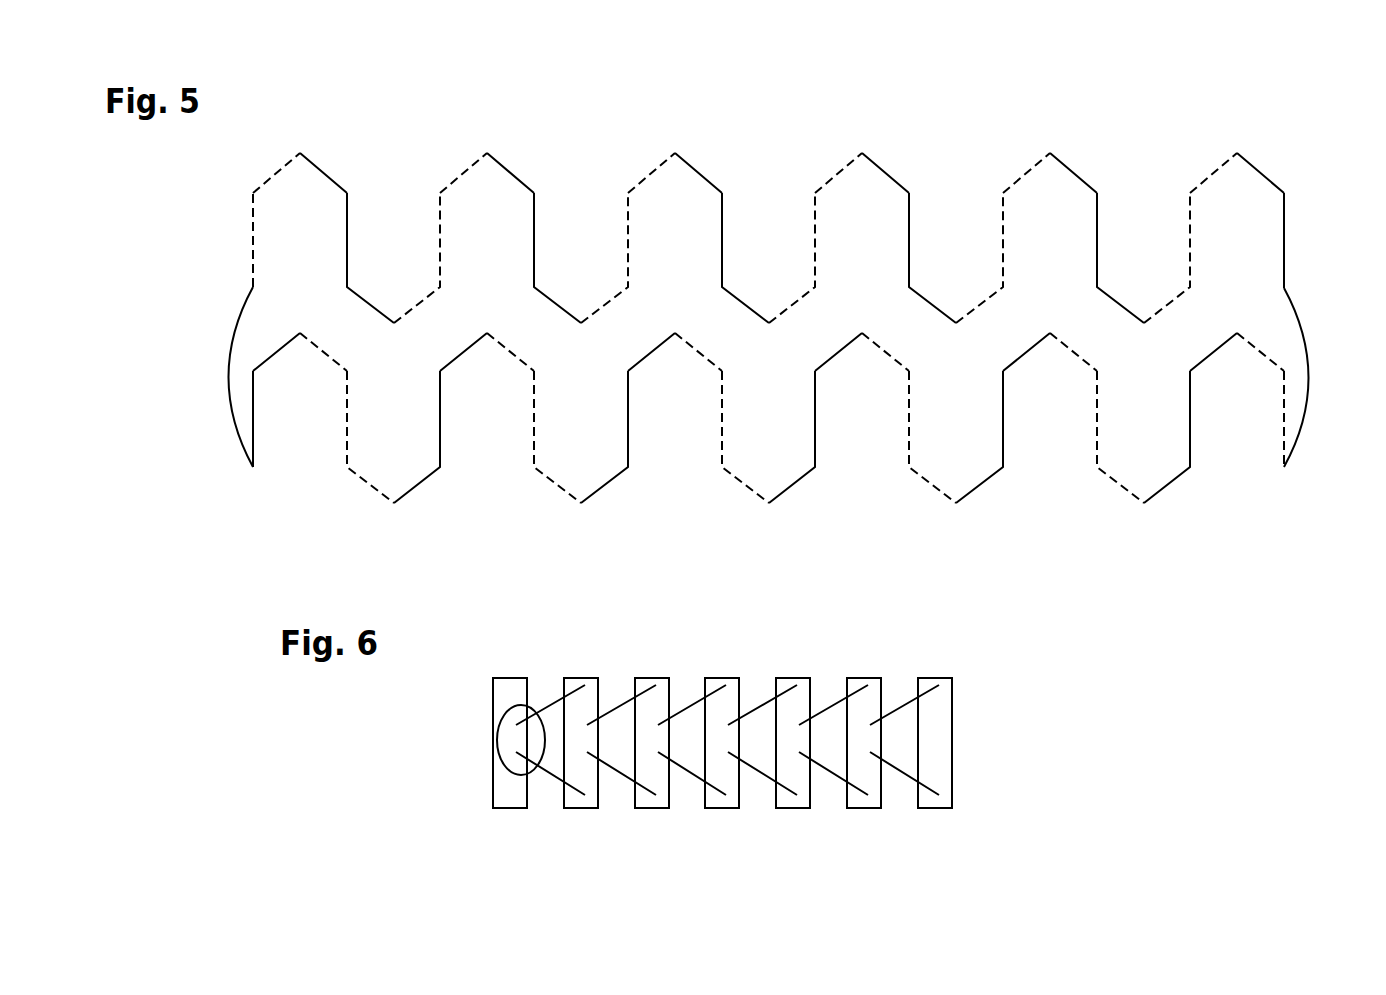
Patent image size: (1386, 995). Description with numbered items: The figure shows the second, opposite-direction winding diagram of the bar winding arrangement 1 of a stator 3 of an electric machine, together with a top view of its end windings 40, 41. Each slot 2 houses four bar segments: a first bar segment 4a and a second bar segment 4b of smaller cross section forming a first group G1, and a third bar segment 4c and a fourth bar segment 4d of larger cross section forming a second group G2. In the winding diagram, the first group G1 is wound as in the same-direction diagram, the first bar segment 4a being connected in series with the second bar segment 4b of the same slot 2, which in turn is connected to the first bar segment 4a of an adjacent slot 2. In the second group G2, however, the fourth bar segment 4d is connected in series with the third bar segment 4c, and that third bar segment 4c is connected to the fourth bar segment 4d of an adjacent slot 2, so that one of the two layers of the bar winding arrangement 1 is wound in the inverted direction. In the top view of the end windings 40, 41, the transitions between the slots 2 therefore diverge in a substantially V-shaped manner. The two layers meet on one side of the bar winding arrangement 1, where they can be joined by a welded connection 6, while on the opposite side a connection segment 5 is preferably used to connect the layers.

In FIG. 5, the bar winding arrangement 1 is at (204, 486).
In FIG. 6, the bar winding arrangement 1 is at (470, 796).
In FIG. 6, the slot 2 is at (577, 800).
In FIG. 6, the stator 3 is at (510, 692).
In FIG. 5, the first bar segment 4a is at (253, 425).
In FIG. 5, the second bar segment 4b is at (347, 437).
In FIG. 5, the third bar segment 4c is at (347, 232).
In FIG. 5, the fourth bar segment 4d is at (253, 233).
In FIG. 5, the connection segment 5 is at (1307, 376).
In FIG. 5, the welded connection 6 is at (230, 352).
In FIG. 5, the end winding 40 is at (300, 334).
In FIG. 6, the end winding 40 is at (550, 776).
In FIG. 5, the end winding 41 is at (300, 153).
In FIG. 6, the end winding 41 is at (550, 703).
In FIG. 5, the first group G1 is at (331, 382).
In FIG. 5, the second group G2 is at (333, 251).